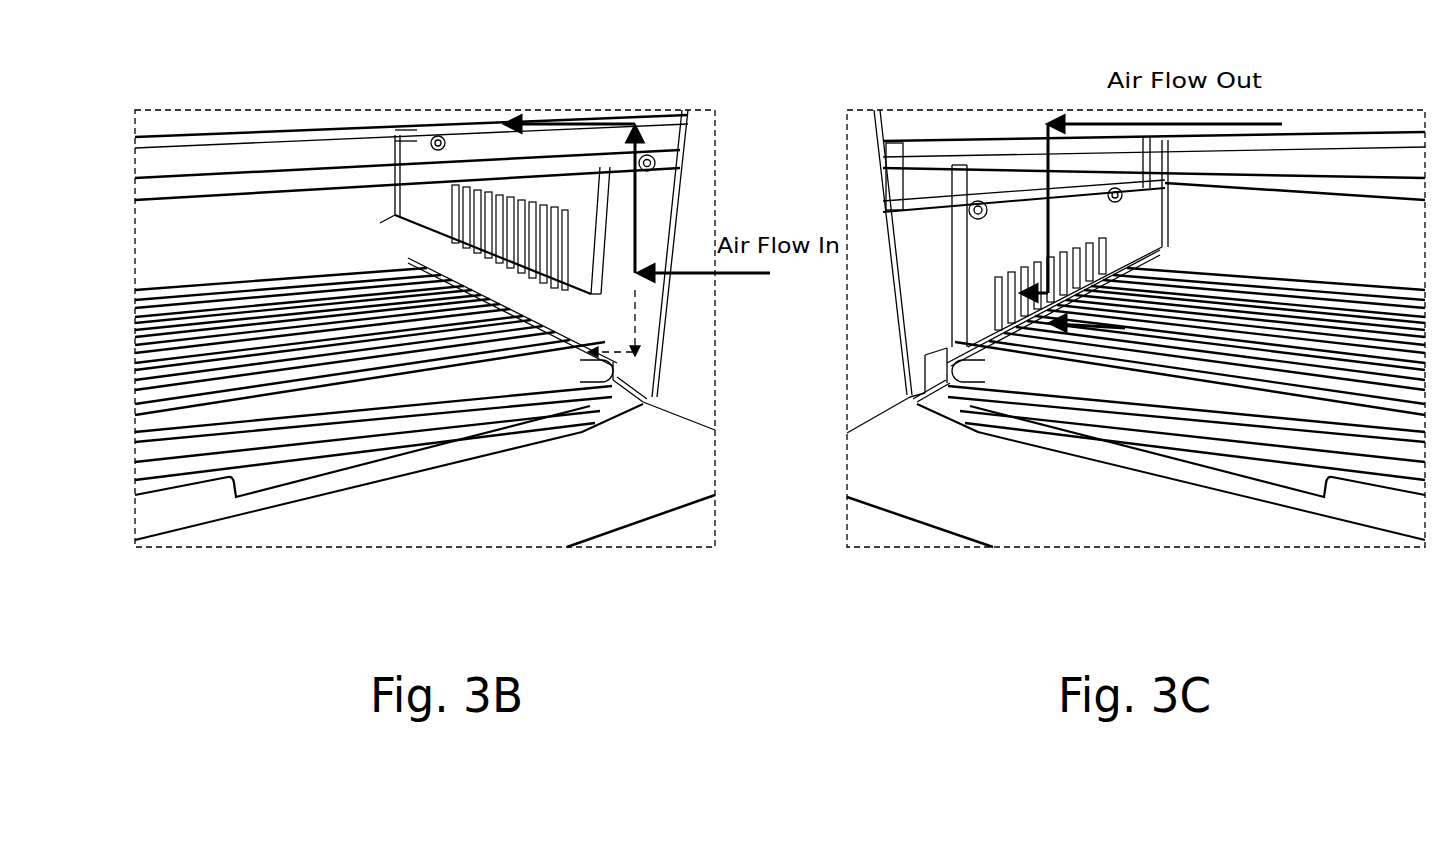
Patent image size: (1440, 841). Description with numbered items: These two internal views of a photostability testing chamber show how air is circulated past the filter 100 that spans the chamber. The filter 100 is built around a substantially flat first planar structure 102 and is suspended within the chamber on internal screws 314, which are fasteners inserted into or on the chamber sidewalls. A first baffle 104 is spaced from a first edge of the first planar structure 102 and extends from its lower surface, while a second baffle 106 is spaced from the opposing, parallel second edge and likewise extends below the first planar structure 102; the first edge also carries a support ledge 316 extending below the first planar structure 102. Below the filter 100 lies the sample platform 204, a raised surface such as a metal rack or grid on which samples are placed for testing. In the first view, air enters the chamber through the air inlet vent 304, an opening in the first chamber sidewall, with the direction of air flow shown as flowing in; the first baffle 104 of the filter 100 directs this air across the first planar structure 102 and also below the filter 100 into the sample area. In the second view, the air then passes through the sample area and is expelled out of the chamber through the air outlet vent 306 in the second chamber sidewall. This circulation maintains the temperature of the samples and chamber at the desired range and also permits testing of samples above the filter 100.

In FIG. 3B, the filter 100 is at (283, 157).
In FIG. 3C, the filter 100 is at (1330, 150).
In FIG. 3B, the first planar structure 102 is at (345, 176).
In FIG. 3C, the first planar structure 102 is at (1268, 178).
In FIG. 3B, the first baffle 104 is at (597, 268).
In FIG. 3C, the first baffle 104 is at (1068, 243).
In FIG. 3C, the second baffle 106 is at (952, 277).
In FIG. 3B, the sample platform 204 is at (408, 413).
In FIG. 3C, the sample platform 204 is at (1205, 393).
In FIG. 3B, the air inlet vent 304 is at (533, 208).
In FIG. 3C, the air inlet vent 304 is at (1050, 284).
In FIG. 3C, the air outlet vent 306 is at (995, 318).
In FIG. 3B, the internal screws 314 is at (649, 158).
In FIG. 3C, the internal screws 314 is at (976, 203).
In FIG. 3C, the support ledge 316 is at (893, 177).